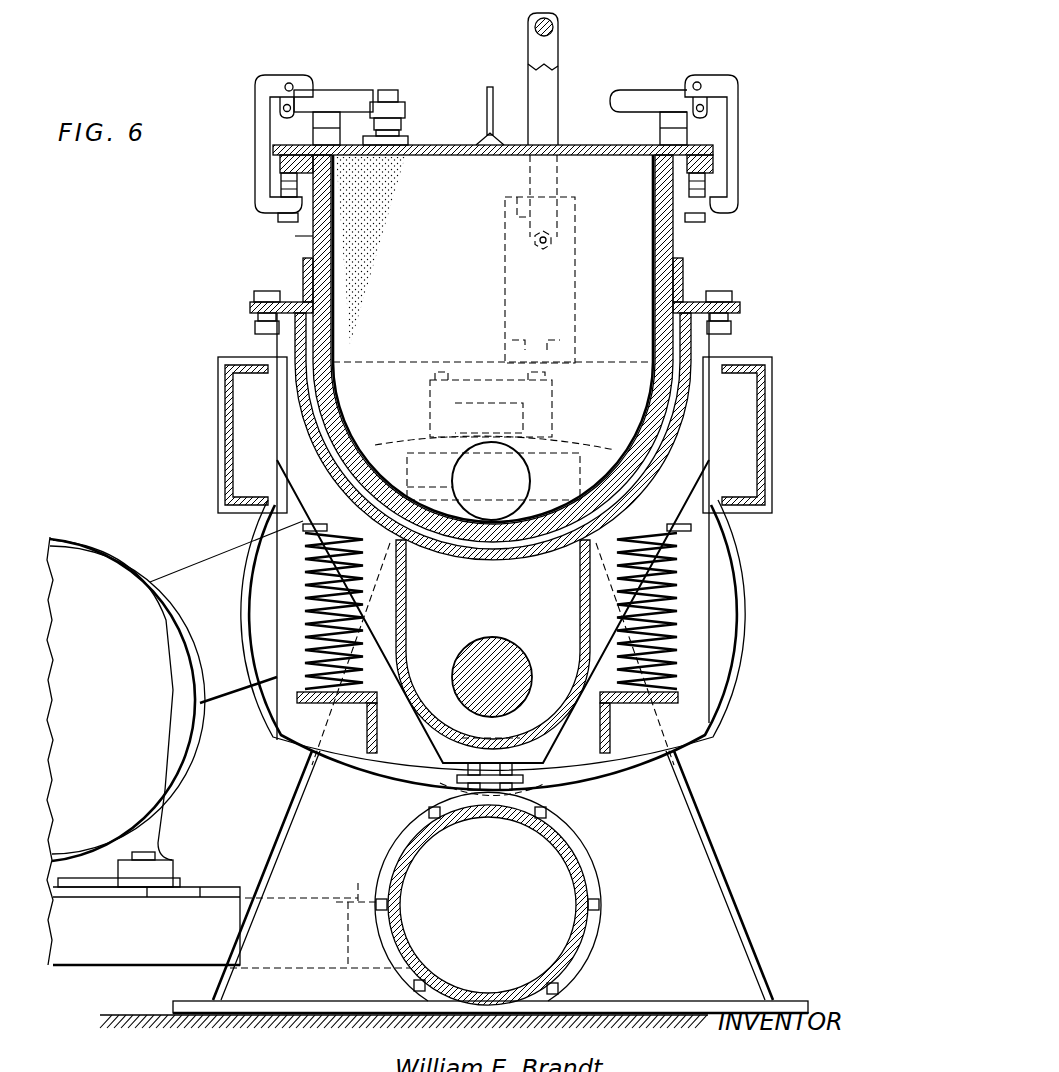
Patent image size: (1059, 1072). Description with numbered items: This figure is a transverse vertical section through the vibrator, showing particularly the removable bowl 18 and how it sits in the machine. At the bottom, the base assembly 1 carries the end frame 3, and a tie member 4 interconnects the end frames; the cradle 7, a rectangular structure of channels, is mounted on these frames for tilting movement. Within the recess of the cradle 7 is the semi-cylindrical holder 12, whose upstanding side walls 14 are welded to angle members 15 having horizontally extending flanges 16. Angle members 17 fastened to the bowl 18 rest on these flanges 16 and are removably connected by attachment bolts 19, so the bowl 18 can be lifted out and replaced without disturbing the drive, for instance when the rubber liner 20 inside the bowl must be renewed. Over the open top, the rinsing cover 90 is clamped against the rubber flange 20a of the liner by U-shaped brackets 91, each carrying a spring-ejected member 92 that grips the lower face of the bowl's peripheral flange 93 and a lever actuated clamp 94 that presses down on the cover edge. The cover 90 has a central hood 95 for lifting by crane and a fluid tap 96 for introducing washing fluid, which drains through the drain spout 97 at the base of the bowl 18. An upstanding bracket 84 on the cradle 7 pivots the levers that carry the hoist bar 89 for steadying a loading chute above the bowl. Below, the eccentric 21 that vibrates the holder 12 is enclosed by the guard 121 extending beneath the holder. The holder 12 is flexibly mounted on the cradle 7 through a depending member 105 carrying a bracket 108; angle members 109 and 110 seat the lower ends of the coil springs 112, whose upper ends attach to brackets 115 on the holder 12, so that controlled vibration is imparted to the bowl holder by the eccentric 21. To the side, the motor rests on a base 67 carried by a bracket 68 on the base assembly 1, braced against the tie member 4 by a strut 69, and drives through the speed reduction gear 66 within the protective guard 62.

The base assembly 1 is at (617, 1012).
The end frame 3 is at (712, 873).
The tie member 4 is at (590, 883).
The cradle 7 is at (223, 432).
The holder 12 is at (300, 444).
The upstanding side walls 14 is at (684, 298).
The angle members 15 is at (703, 348).
The horizontally extending flanges 16 is at (257, 322).
The angle members 17 is at (288, 295).
The removable bowl 18 is at (310, 234).
The attachment bolts 19 is at (260, 291).
The rubber liner 20 is at (300, 444).
The rubber flange 20a is at (657, 149).
The eccentric 21 is at (527, 657).
The protective guard 62 is at (180, 579).
The speed reduction gear 66 is at (88, 573).
The base 67 is at (148, 893).
The bracket 68 is at (180, 957).
The strut 69 is at (320, 914).
The upstanding bracket 84 is at (562, 287).
The hoist bar 89 is at (560, 33).
The rinsing cover 90 is at (427, 146).
The U-shaped brackets 91 is at (258, 130).
The spring-ejected member 92 is at (280, 188).
The peripheral flange 93 is at (283, 167).
The lever actuated clamp 94 is at (682, 130).
The central hood 95 is at (488, 94).
The fluid tap 96 is at (388, 115).
The drain spout 97 is at (460, 470).
The depending transversely extending member 105 is at (698, 640).
The bracket 108 is at (558, 797).
The angle member 109 is at (303, 704).
The angle member 110 is at (628, 707).
The coil springs 112 is at (307, 607).
The brackets 115 is at (298, 526).
The guard 121 is at (407, 660).